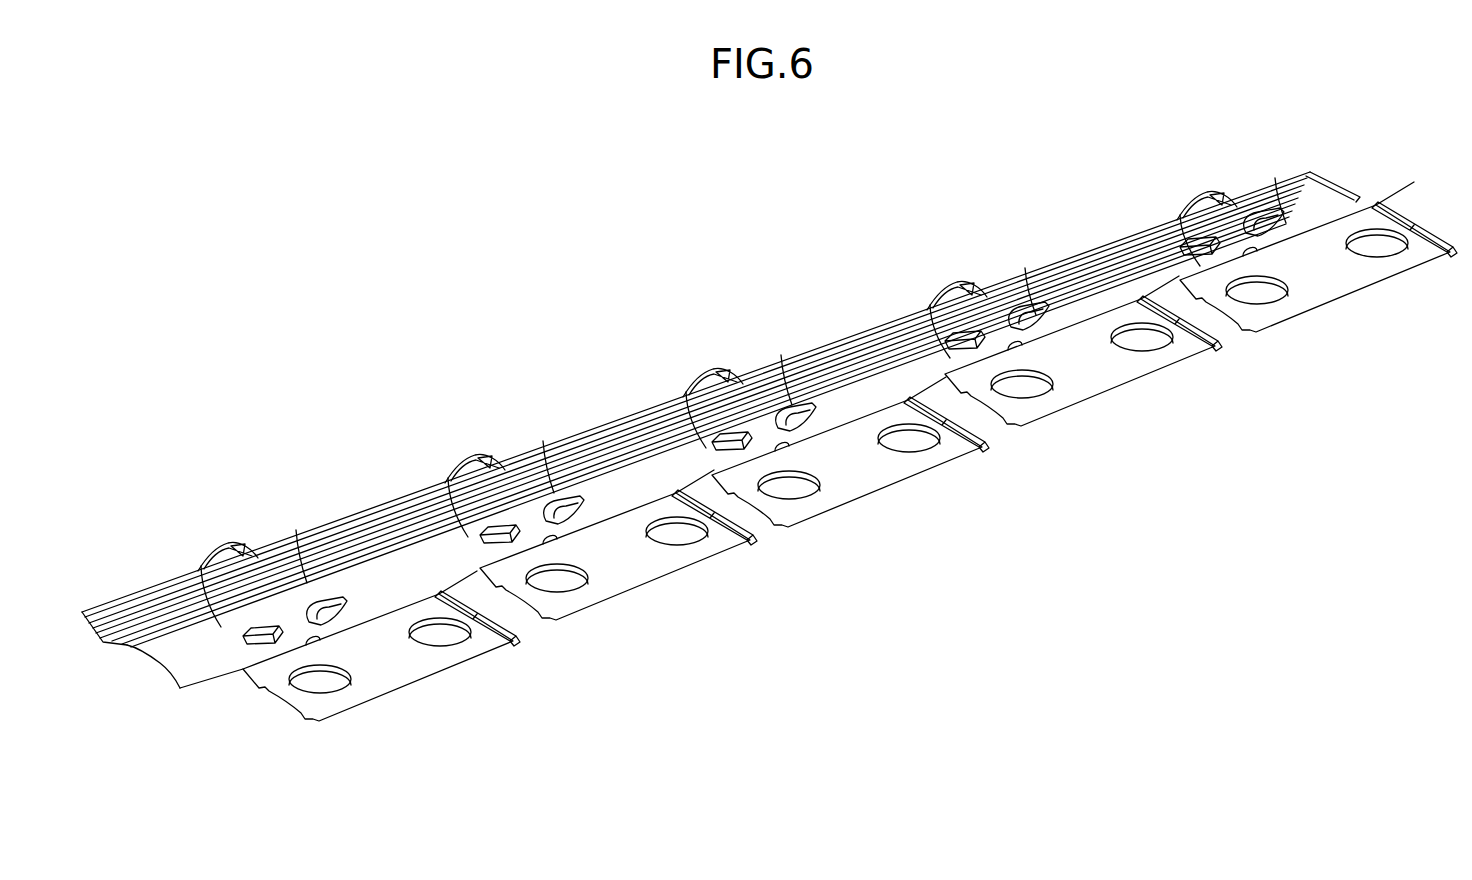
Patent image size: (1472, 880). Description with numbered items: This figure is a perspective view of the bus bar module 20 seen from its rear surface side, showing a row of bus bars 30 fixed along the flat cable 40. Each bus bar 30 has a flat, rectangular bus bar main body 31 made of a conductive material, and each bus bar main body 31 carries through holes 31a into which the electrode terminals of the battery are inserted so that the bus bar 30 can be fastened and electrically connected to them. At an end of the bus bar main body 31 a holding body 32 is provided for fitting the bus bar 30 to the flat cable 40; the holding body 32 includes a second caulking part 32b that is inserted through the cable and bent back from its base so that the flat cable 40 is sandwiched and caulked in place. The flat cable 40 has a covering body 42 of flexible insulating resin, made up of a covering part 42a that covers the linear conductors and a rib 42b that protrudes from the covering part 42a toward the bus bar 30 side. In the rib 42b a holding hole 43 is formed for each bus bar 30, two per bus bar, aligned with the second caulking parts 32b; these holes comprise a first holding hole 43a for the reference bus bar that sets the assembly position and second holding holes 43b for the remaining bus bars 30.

The wiring member 20 is at (546, 218).
The bus bar 30 is at (427, 802).
The bus bar main body 31 is at (500, 656).
The through hole 31a is at (322, 690).
The holding body 32 is at (700, 362).
The second caulking part 32b is at (201, 565).
The flat cable 40 is at (1292, 148).
The covering body 42 is at (696, 483).
The covering part 42a is at (125, 646).
The rib 42b is at (200, 682).
The holding hole 43 is at (805, 522).
The first holding hole 43a is at (768, 516).
The second holding hole 43b is at (283, 642).